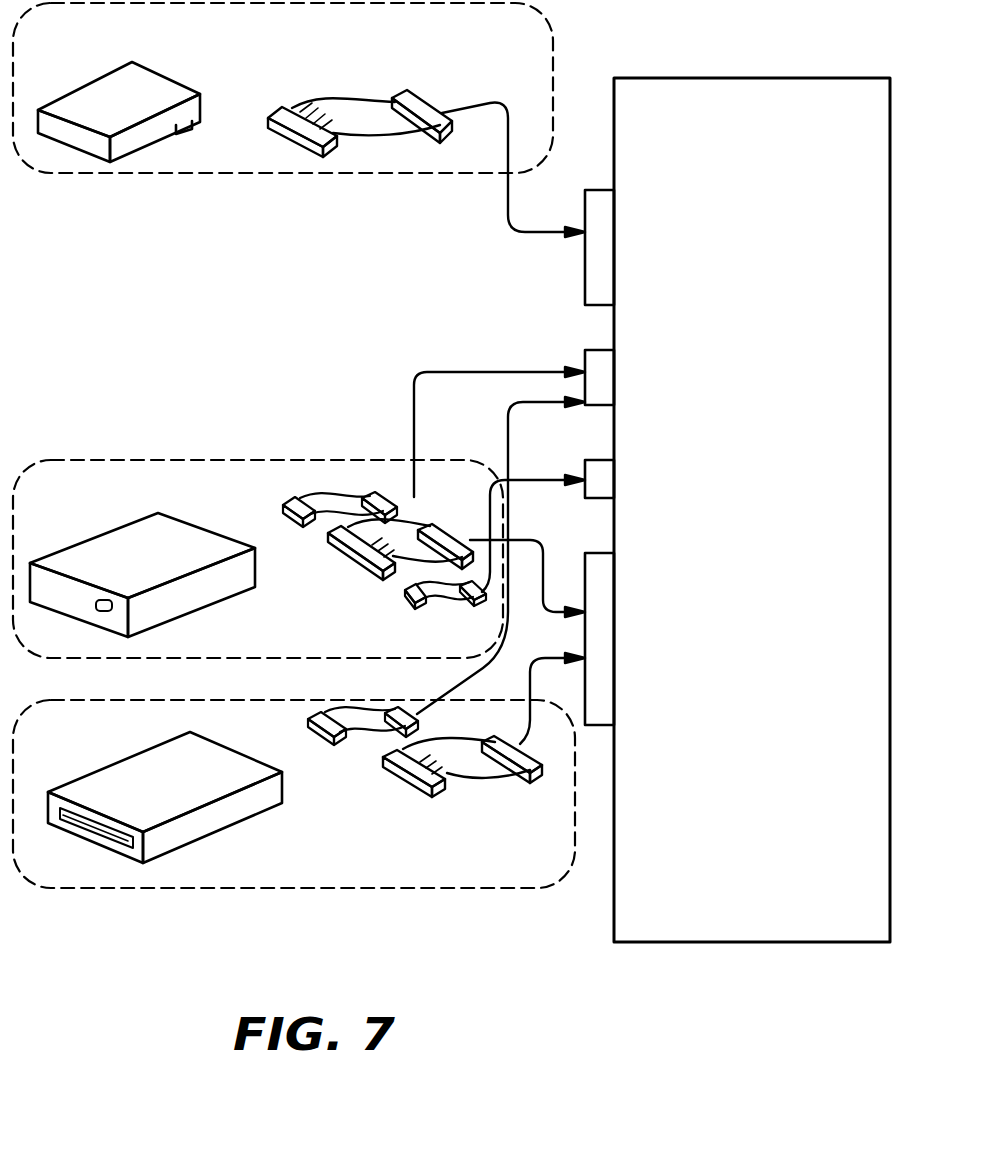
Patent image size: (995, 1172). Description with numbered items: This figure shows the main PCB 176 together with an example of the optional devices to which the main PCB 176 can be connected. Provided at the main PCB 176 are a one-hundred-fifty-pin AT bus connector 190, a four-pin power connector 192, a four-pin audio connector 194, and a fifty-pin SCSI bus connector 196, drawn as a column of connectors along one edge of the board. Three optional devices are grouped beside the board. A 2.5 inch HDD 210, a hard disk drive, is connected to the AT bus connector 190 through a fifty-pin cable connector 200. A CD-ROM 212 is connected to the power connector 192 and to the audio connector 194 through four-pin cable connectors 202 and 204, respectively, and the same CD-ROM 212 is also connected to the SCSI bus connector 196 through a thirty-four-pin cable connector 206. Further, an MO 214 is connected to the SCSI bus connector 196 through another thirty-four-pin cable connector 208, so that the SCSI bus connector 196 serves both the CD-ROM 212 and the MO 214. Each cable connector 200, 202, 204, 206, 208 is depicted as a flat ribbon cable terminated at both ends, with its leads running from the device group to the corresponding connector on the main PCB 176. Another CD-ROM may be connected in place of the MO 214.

The main PCB 176 is at (781, 78).
The AT bus connector 190 is at (585, 270).
The power connector 192 is at (585, 350).
The audio connector 194 is at (596, 499).
The SCSI bus connector 196 is at (600, 726).
The cable connector 200 is at (320, 100).
The cable connector 202 is at (341, 497).
The cable connector 204 is at (435, 596).
The cable connector 206 is at (360, 556).
The cable connector 208 is at (483, 778).
The 2.5 inch HDD 210 is at (170, 80).
The CD-ROM 212 is at (197, 597).
The MO 214 is at (255, 806).